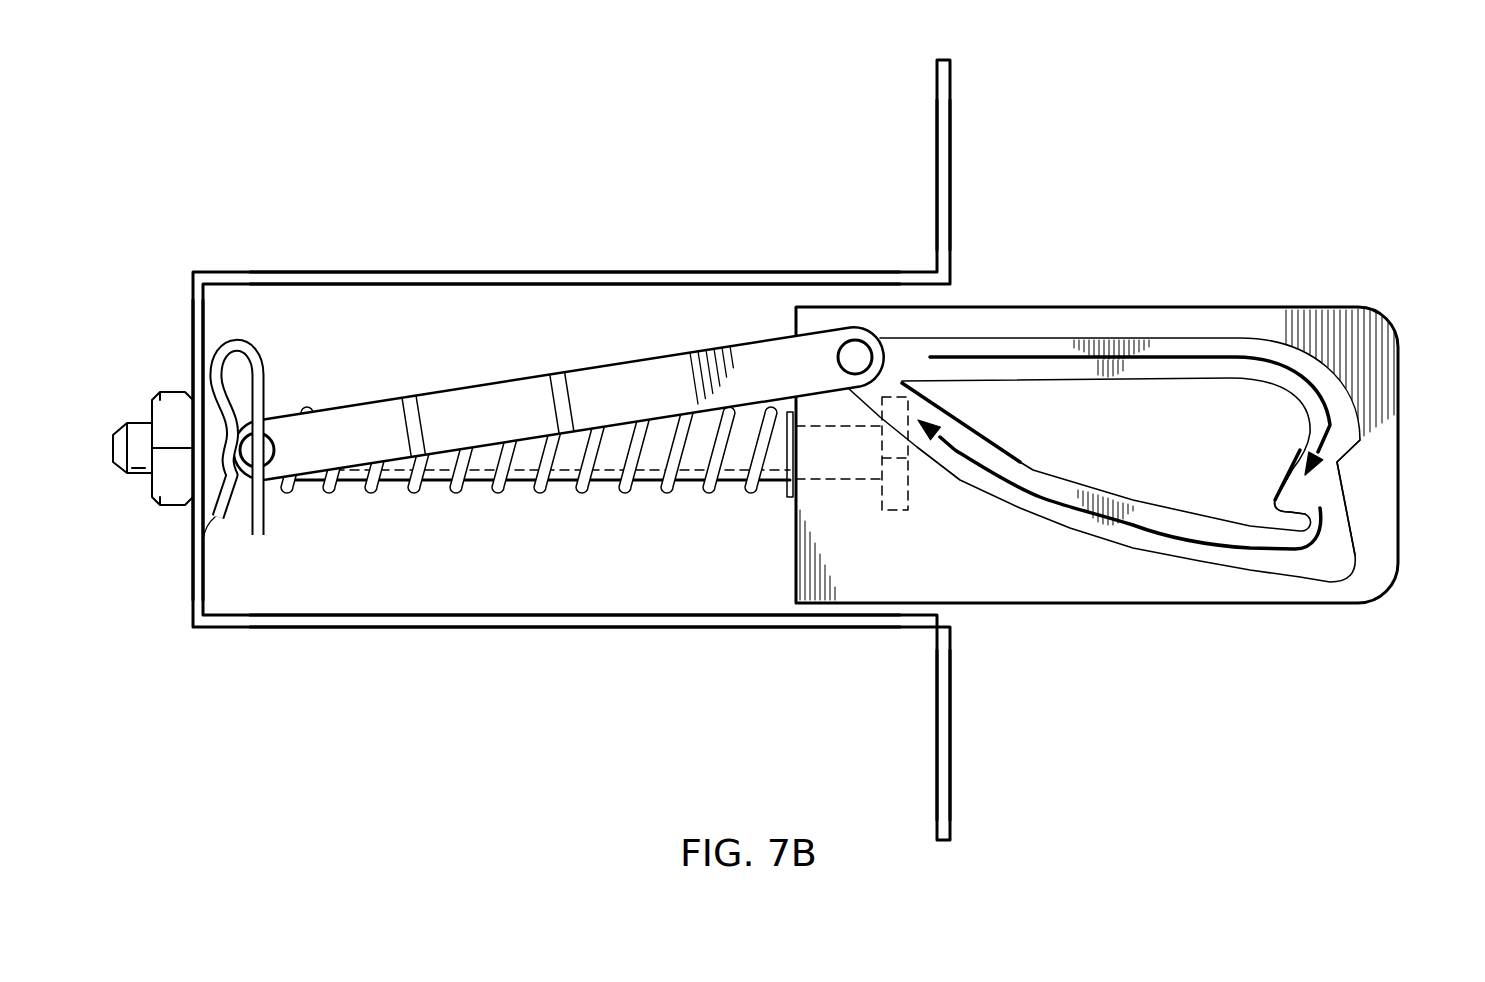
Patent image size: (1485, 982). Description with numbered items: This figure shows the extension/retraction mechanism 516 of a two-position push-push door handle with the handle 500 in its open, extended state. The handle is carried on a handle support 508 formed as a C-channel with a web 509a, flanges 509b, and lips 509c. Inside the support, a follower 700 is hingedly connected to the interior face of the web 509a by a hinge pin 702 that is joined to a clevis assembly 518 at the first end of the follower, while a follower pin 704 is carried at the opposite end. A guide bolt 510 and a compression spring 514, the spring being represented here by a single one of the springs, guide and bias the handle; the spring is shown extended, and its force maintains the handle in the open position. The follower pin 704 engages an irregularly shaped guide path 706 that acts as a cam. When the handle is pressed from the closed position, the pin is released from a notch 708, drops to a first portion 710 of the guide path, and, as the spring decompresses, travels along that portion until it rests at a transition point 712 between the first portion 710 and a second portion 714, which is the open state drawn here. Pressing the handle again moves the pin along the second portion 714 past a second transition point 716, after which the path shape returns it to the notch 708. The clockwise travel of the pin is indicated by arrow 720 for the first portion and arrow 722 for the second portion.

The handle 500 is at (1355, 272).
The handle support 508 is at (390, 247).
The web 509a is at (190, 328).
The flanges 509b is at (620, 272).
The lips 509c is at (950, 172).
The guide bolt 510 is at (605, 472).
The compression spring 514 is at (455, 496).
The extension/retraction mechanism 516 is at (686, 513).
The clevis assembly 518 is at (233, 527).
The follower 700 is at (480, 384).
The hinge pin 702 is at (266, 370).
The follower pin 704 is at (853, 353).
The guide path 706 is at (1258, 350).
The notch 708 is at (1273, 497).
The first portion of the guide path 710 is at (1160, 528).
The transition point 712 is at (893, 362).
The second portion of the guide path 714 is at (1045, 340).
The second transition point 716 is at (1362, 444).
The arrow 720 is at (1040, 498).
The arrow 722 is at (1180, 352).